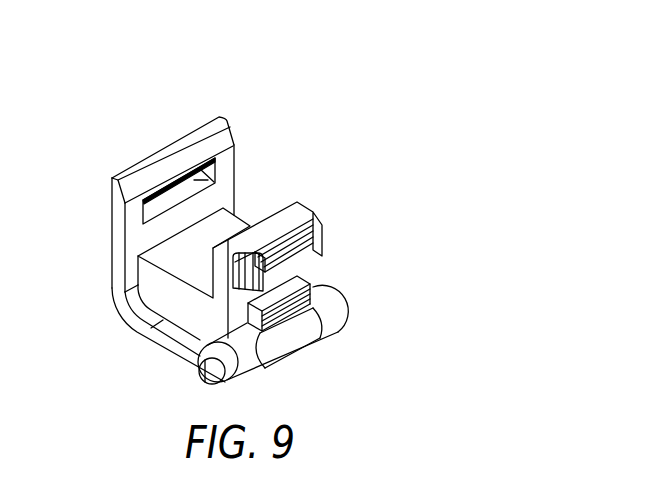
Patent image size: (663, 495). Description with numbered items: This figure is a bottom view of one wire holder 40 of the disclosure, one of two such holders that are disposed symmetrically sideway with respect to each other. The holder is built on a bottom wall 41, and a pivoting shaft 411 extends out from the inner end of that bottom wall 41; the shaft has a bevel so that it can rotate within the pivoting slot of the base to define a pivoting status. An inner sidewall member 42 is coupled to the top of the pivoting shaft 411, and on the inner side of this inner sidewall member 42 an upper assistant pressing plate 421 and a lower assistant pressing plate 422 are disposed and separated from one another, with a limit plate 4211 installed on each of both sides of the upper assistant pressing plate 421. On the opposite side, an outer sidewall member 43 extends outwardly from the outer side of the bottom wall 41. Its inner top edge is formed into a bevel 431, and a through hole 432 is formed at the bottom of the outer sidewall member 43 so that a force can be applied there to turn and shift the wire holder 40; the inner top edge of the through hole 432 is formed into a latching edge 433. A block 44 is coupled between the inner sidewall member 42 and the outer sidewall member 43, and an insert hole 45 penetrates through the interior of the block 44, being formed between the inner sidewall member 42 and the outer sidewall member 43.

The wire holder 40 is at (332, 157).
The bottom wall 41 is at (157, 349).
The pivoting shaft 411 is at (203, 369).
The inner sidewall member 42 is at (314, 263).
The upper assistant pressing plate 421 is at (275, 253).
The limit plate 4211 is at (325, 245).
The lower assistant pressing plate 422 is at (316, 314).
The outer sidewall member 43 is at (176, 186).
The bevel 431 is at (202, 148).
The through hole 432 is at (194, 180).
The latching edge 433 is at (183, 210).
The block 44 is at (180, 257).
The insert hole 45 is at (287, 340).